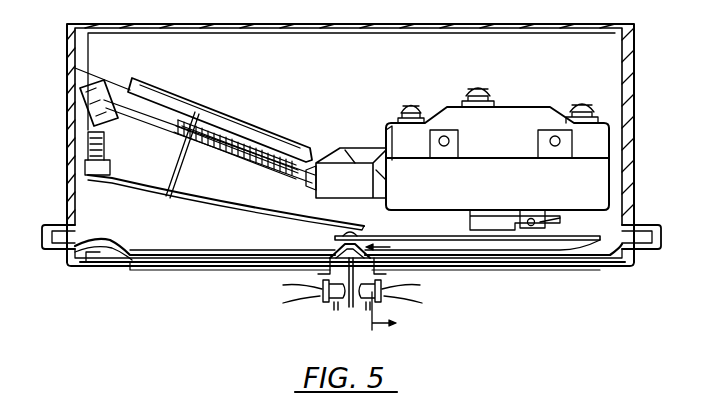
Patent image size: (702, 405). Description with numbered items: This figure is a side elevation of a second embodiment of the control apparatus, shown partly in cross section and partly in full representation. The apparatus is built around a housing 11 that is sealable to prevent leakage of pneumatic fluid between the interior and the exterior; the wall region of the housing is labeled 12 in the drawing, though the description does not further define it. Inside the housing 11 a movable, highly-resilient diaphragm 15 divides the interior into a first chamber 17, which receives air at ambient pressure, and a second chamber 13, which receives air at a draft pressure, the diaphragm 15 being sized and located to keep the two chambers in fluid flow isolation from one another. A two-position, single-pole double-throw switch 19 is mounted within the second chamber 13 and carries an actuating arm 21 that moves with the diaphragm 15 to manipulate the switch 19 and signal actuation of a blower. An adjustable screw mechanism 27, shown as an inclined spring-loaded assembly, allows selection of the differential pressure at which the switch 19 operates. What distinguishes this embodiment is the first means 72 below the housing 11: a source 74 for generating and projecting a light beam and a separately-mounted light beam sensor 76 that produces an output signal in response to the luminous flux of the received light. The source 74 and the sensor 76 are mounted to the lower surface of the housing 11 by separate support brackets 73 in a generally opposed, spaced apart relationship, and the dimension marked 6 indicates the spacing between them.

The housing 11 is at (636, 135).
The housing base 12 is at (32, 126).
The second chamber 13 is at (207, 237).
The diaphragm 15 is at (118, 243).
The first chamber 17 is at (105, 265).
The switch 19 is at (480, 185).
The actuating arm 21 is at (416, 220).
The adjustable screw mechanism 27 is at (185, 158).
The dimension 6 is at (386, 285).
The first means 72 is at (326, 312).
The support brackets 73 is at (250, 288).
The source 74 is at (383, 297).
The light beam sensor 76 is at (320, 305).